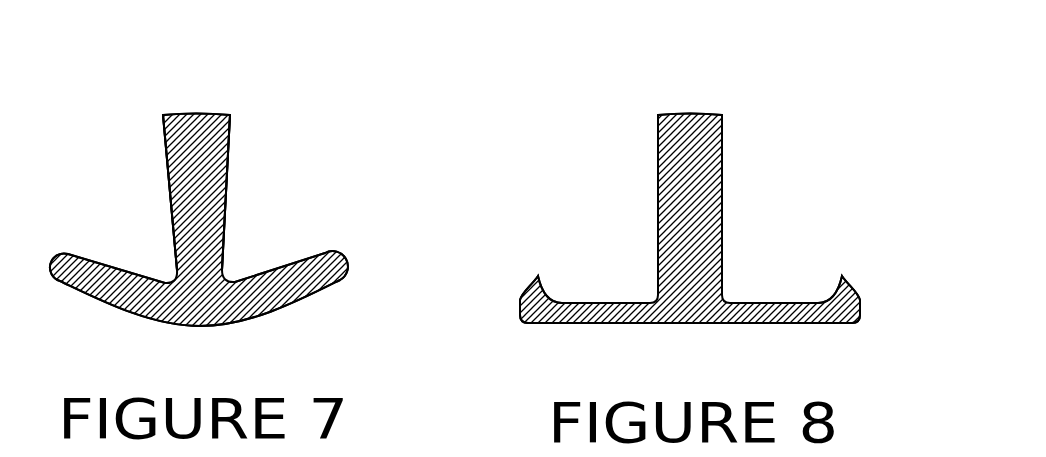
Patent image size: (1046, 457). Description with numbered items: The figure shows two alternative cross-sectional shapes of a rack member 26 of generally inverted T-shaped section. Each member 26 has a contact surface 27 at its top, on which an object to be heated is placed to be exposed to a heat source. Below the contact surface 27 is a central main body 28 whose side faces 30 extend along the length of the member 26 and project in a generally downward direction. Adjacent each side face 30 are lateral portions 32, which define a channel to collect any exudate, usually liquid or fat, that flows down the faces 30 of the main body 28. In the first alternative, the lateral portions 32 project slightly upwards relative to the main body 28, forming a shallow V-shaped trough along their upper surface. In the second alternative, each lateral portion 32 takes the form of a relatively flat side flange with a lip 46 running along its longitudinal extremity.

In FIG. 7, the member 26 is at (150, 110).
In FIG. 8, the member 26 is at (726, 149).
In FIG. 7, the contact surface 27 is at (195, 113).
In FIG. 8, the contact surface 27 is at (688, 112).
In FIG. 7, the central main body 28 is at (220, 152).
In FIG. 8, the central main body 28 is at (658, 162).
In FIG. 7, the faces 30 is at (172, 208).
In FIG. 8, the faces 30 is at (657, 237).
In FIG. 7, the lateral portions 32 is at (62, 283).
In FIG. 8, the lateral portions 32 is at (605, 316).
In FIG. 8, the lip 46 is at (522, 292).